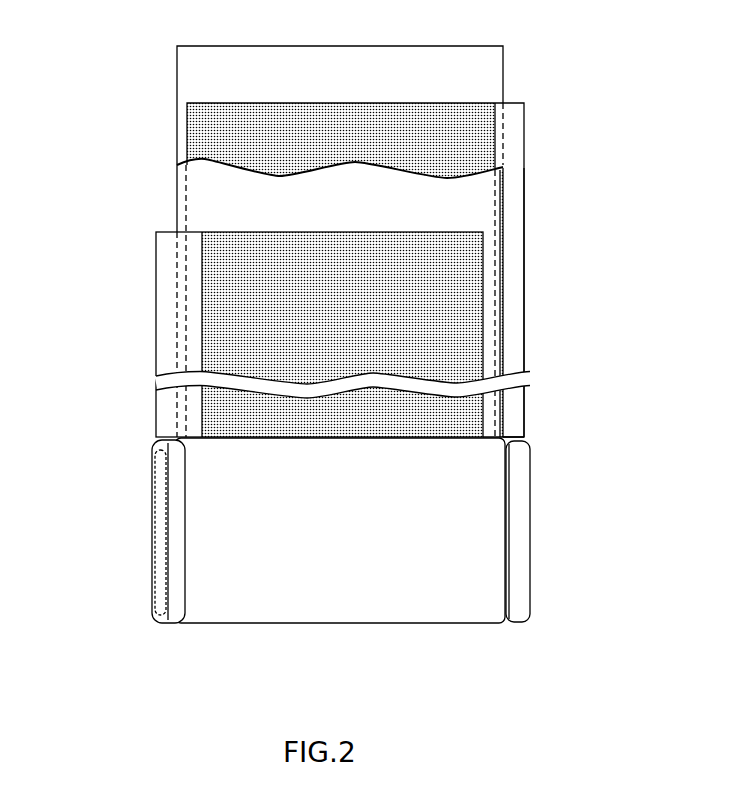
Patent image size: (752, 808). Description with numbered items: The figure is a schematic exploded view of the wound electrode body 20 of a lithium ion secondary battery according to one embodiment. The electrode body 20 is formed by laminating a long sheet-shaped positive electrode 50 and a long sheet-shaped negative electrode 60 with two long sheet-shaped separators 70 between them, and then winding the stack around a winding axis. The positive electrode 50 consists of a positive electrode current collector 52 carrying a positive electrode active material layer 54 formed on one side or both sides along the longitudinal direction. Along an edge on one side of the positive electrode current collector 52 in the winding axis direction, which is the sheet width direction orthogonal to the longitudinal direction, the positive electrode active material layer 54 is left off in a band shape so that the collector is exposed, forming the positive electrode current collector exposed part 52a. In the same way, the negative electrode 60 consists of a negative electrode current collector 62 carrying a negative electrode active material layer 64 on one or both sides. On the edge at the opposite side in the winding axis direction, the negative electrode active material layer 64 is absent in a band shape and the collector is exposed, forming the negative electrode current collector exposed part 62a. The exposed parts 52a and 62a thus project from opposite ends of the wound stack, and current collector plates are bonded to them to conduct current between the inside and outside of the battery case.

The electrode body 20 is at (425, 602).
The positive electrode 50 is at (156, 300).
The positive electrode current collector 52 is at (156, 365).
The positive electrode current collector exposed part 52a is at (165, 335).
The positive electrode active material layer 54 is at (215, 245).
The negative electrode 60 is at (524, 178).
The negative electrode current collector 62 is at (525, 278).
The negative electrode current collector exposed part 62a is at (512, 225).
The negative electrode active material layer 64 is at (490, 124).
The separator 70 is at (195, 75).